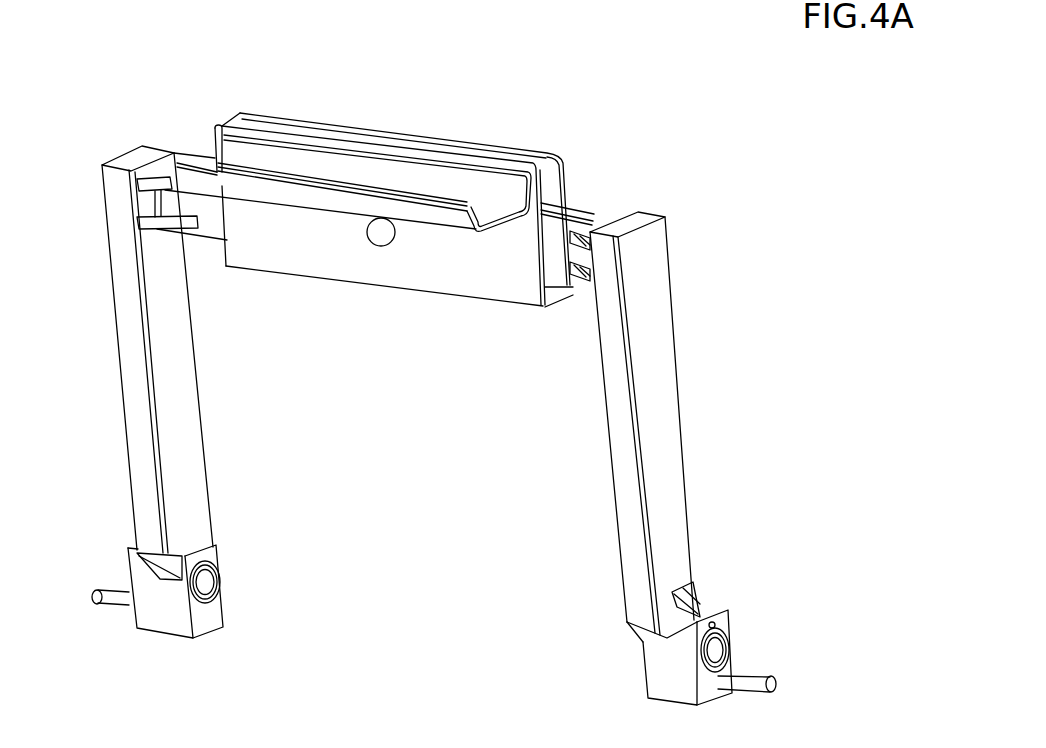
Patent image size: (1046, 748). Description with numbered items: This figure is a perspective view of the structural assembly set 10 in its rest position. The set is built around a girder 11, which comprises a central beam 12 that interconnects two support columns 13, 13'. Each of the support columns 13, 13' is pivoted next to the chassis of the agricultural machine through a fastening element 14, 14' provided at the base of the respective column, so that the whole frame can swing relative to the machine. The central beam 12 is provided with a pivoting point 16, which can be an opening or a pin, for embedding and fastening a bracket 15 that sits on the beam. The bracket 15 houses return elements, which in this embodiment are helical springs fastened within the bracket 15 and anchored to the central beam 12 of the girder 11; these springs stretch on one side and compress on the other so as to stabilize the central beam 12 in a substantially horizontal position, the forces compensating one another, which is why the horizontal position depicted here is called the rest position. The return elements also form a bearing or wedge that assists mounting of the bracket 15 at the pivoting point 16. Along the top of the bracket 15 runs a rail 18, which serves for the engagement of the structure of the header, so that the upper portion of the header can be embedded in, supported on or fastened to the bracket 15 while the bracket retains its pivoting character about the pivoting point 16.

The structural assembly set 10 is at (706, 185).
The girder 11 is at (586, 206).
The central beam 12 is at (568, 258).
The support column 13 is at (111, 349).
The support column 13' is at (689, 427).
The fastening element 14 is at (201, 583).
The fastening element 14' is at (738, 643).
The bracket 15 is at (471, 140).
The pivoting point 16 is at (383, 240).
The rail 18 is at (216, 168).